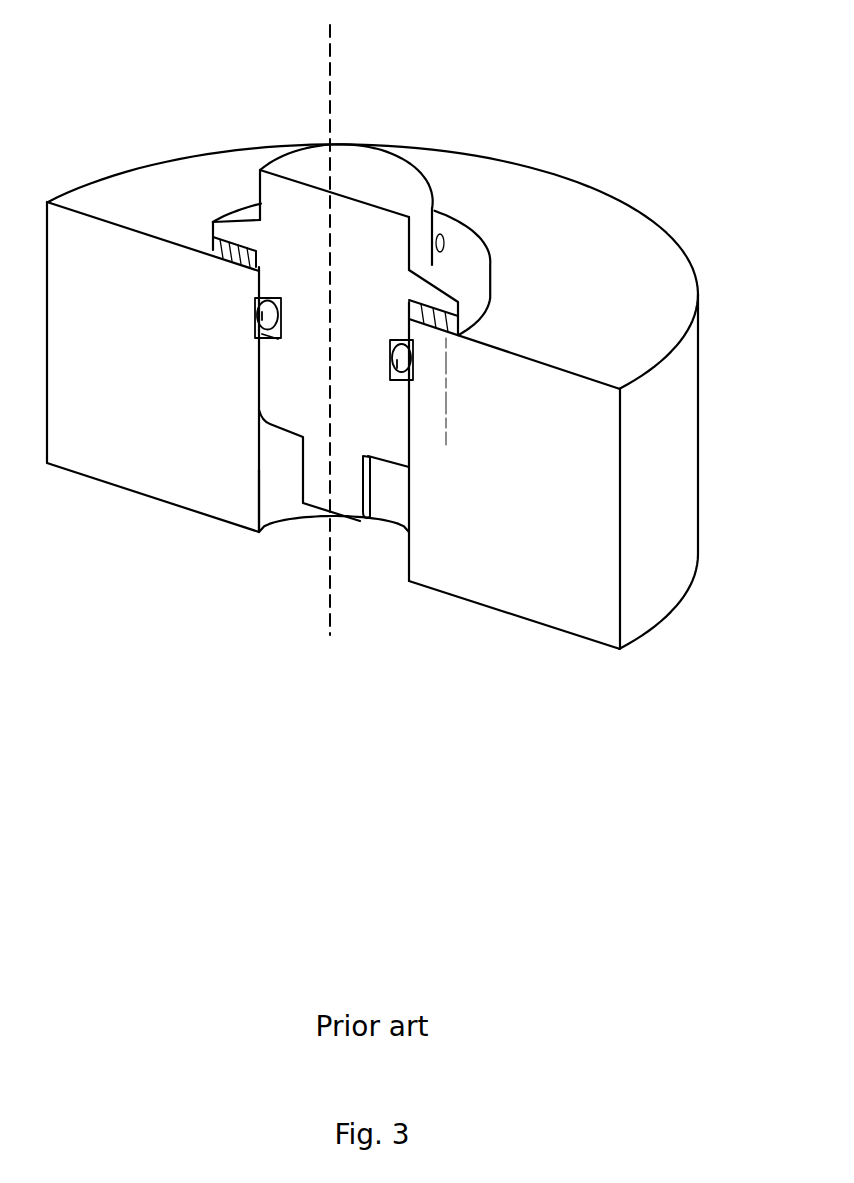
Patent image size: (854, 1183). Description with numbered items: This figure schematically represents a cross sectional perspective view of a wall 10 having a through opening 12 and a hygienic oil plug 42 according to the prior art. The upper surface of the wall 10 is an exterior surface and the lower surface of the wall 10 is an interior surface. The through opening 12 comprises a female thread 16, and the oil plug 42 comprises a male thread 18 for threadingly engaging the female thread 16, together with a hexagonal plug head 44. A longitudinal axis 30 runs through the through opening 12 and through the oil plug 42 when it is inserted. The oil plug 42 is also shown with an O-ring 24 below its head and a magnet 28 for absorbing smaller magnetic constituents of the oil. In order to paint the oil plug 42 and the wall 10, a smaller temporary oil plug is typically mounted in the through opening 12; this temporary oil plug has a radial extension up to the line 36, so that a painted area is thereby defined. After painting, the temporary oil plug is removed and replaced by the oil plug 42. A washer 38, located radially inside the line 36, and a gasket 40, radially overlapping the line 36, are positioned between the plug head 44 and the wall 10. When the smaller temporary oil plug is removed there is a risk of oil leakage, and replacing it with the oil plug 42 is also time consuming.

The wall 10 is at (172, 182).
The through opening 12 is at (283, 493).
The female thread 16 is at (258, 495).
The male thread 18 is at (257, 390).
The O-ring 24 is at (268, 340).
The magnet 28 is at (342, 495).
The longitudinal axis 30 is at (332, 600).
The line 36 is at (445, 418).
The washer 38 is at (237, 267).
The gasket 40 is at (215, 251).
The hygienic oil plug 42 is at (303, 163).
The hexagonal plug head 44 is at (390, 175).